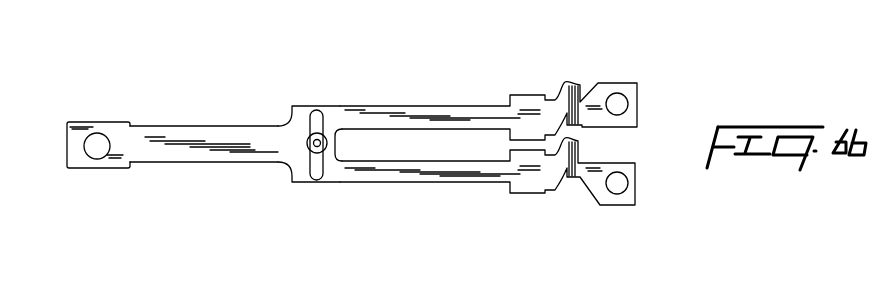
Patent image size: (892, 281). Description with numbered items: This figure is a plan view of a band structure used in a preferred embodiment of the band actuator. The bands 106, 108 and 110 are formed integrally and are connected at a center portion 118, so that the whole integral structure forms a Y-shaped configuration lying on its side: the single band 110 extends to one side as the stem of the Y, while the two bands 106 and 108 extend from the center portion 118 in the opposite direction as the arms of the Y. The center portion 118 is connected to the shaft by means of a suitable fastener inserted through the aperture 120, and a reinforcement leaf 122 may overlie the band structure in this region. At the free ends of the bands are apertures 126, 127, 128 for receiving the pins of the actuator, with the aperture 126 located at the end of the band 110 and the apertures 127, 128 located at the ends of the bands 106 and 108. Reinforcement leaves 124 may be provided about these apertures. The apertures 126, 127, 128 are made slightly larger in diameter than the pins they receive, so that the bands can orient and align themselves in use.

The band 106 is at (448, 117).
The band 108 is at (425, 175).
The band 110 is at (193, 135).
The center portion 118 is at (300, 172).
The aperture 120 is at (324, 139).
The reinforcement leaf 122 is at (310, 122).
The reinforcement leaf 124 is at (113, 130).
The aperture 126 is at (98, 148).
The aperture 127 is at (616, 105).
The aperture 128 is at (618, 183).